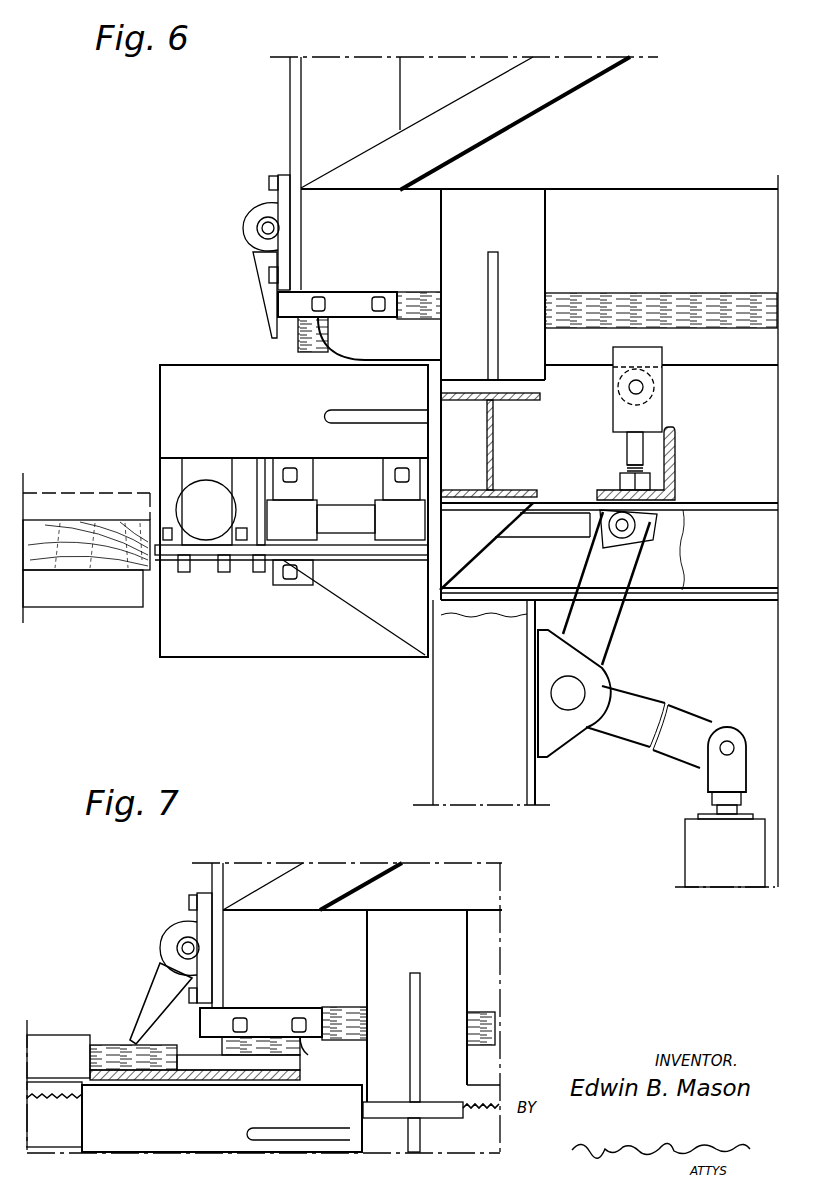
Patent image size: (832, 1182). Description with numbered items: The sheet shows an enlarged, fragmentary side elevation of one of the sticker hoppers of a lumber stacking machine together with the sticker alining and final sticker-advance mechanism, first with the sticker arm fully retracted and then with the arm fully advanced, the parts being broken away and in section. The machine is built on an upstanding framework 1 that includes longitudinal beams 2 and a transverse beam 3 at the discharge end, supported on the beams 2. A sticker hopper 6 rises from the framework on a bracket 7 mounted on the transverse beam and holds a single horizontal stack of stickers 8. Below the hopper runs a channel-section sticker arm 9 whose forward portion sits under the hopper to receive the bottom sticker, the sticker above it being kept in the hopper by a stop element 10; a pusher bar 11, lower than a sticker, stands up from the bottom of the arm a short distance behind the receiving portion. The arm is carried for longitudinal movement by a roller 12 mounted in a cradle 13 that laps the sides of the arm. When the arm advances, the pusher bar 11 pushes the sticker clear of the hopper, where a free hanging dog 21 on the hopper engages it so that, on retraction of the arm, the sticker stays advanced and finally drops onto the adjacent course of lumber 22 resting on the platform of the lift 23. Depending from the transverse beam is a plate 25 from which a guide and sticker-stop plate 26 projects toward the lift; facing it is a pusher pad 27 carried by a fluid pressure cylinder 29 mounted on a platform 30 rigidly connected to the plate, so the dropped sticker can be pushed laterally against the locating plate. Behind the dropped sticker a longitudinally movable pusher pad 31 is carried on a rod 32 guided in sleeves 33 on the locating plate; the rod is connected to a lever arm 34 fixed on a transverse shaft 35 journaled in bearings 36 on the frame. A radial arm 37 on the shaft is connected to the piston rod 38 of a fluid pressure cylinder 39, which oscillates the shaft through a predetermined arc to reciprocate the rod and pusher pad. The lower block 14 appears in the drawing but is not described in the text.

In FIG. 6, the framework 1 is at (428, 741).
In FIG. 6, the longitudinal beams 2 is at (717, 512).
In FIG. 6, the transverse beam 3 is at (494, 443).
In FIG. 7, the transverse beam 3 is at (380, 1115).
In FIG. 6, the sticker hopper 6 is at (318, 94).
In FIG. 7, the sticker hopper 6 is at (257, 917).
In FIG. 6, the bracket 7 is at (527, 283).
In FIG. 7, the bracket 7 is at (385, 935).
In FIG. 6, the sticker 8 is at (300, 328).
In FIG. 7, the sticker 8 is at (283, 1045).
In FIG. 6, the sticker arm 9 is at (593, 335).
In FIG. 7, the sticker arm 9 is at (52, 1040).
In FIG. 6, the stop element 10 is at (280, 302).
In FIG. 7, the stop element 10 is at (207, 1020).
In FIG. 7, the pusher bar 11 is at (197, 1068).
In FIG. 6, the roller 12 is at (655, 387).
In FIG. 6, the cradle 13 is at (617, 405).
In FIG. 7, the base block 14 is at (48, 1103).
In FIG. 6, the free hanging dog 21 is at (257, 283).
In FIG. 7, the free hanging dog 21 is at (153, 992).
In FIG. 6, the course of lumber 22 is at (80, 530).
In FIG. 6, the lift 23 is at (74, 614).
In FIG. 6, the plate 25 is at (427, 607).
In FIG. 7, the plate 25 is at (355, 1125).
In FIG. 6, the guide and sticker-stop plate 26 is at (227, 640).
In FIG. 6, the pusher pad 27 is at (218, 470).
In FIG. 6, the fluid pressure cylinder 29 is at (198, 492).
In FIG. 6, the platform 30 is at (238, 560).
In FIG. 6, the longitudinally movable pusher pad 31 is at (262, 458).
In FIG. 6, the rod 32 is at (541, 522).
In FIG. 6, the sleeve 33 is at (365, 560).
In FIG. 6, the lever arm 34 is at (605, 625).
In FIG. 6, the transverse shaft 35 is at (578, 694).
In FIG. 6, the bearing 36 is at (572, 737).
In FIG. 6, the radial arm 37 is at (690, 718).
In FIG. 6, the piston rod 38 is at (720, 808).
In FIG. 6, the fluid pressure cylinder 39 is at (705, 857).